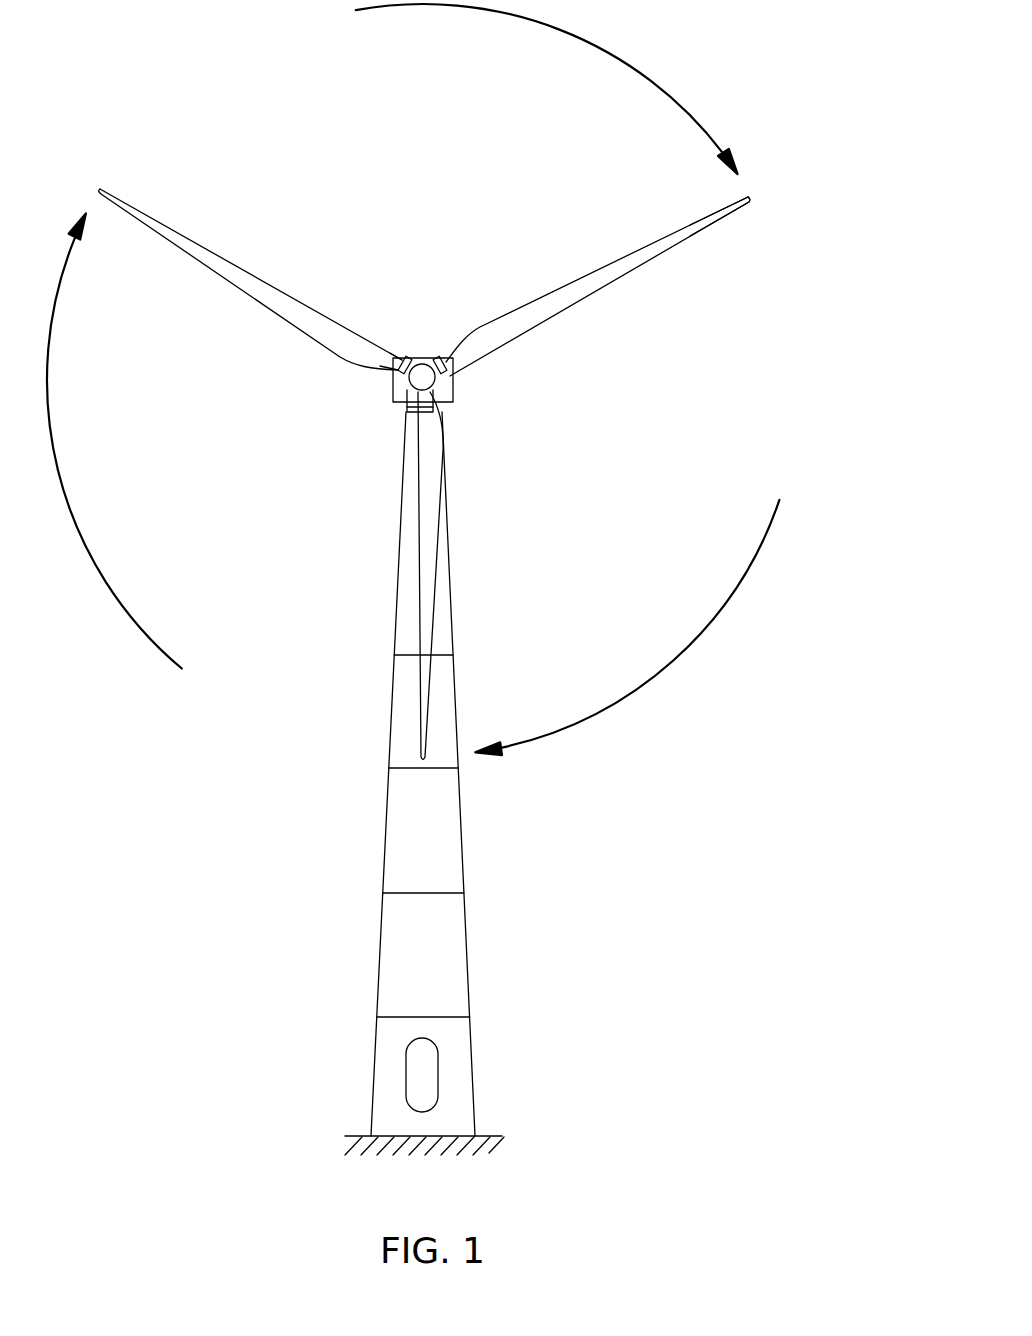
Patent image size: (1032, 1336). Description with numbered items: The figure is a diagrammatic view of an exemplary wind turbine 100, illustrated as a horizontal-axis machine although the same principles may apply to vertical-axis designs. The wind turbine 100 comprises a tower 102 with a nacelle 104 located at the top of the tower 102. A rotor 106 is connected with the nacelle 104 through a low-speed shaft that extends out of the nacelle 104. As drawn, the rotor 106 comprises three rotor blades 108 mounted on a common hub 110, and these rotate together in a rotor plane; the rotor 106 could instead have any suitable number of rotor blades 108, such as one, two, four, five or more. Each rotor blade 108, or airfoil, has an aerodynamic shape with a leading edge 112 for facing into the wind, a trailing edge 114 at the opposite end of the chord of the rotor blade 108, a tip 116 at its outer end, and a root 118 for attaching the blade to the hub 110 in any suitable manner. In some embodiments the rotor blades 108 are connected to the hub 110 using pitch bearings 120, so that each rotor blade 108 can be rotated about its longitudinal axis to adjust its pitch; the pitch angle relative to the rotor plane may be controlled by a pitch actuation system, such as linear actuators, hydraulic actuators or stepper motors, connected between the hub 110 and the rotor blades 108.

The wind turbine 100 is at (362, 962).
The tower 102 is at (443, 833).
The nacelle 104 is at (452, 402).
The rotor 106 is at (367, 390).
The rotor blade 108 is at (205, 266).
The hub 110 is at (423, 377).
The leading edge 112 is at (625, 275).
The trailing edge 114 is at (633, 252).
The tip 116 is at (760, 187).
The root 118 is at (470, 380).
The pitch bearing 120 is at (388, 352).